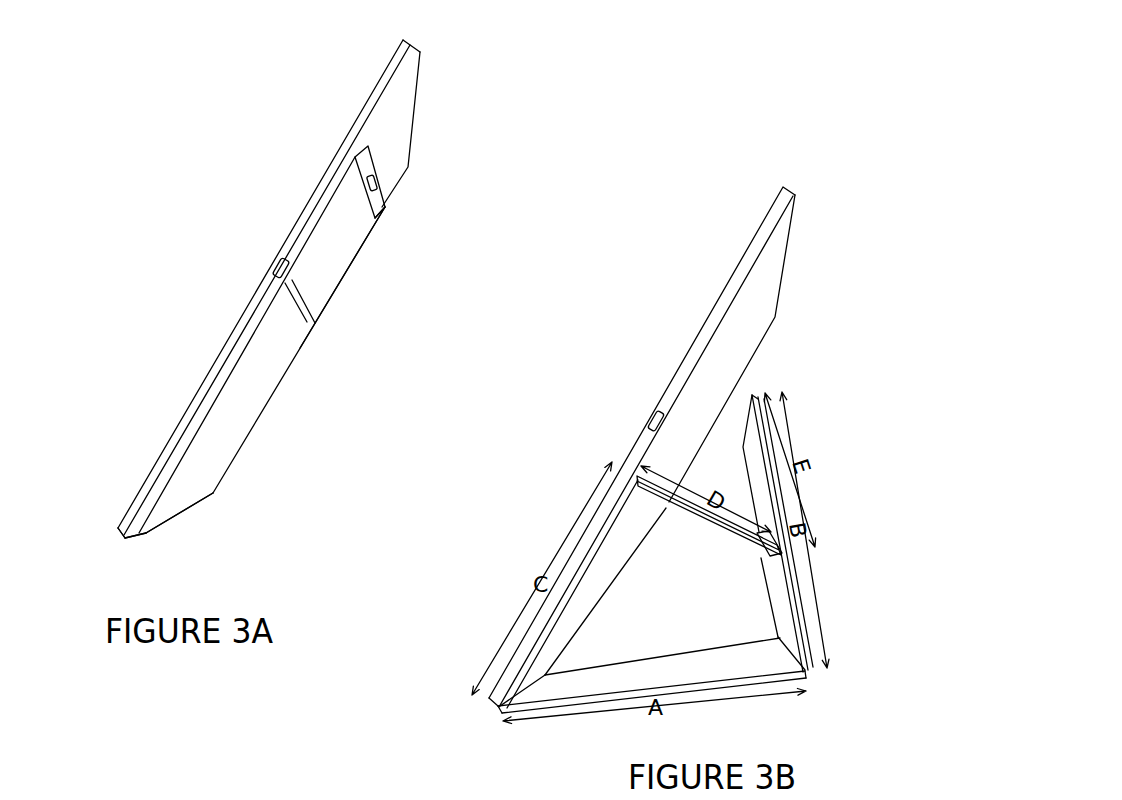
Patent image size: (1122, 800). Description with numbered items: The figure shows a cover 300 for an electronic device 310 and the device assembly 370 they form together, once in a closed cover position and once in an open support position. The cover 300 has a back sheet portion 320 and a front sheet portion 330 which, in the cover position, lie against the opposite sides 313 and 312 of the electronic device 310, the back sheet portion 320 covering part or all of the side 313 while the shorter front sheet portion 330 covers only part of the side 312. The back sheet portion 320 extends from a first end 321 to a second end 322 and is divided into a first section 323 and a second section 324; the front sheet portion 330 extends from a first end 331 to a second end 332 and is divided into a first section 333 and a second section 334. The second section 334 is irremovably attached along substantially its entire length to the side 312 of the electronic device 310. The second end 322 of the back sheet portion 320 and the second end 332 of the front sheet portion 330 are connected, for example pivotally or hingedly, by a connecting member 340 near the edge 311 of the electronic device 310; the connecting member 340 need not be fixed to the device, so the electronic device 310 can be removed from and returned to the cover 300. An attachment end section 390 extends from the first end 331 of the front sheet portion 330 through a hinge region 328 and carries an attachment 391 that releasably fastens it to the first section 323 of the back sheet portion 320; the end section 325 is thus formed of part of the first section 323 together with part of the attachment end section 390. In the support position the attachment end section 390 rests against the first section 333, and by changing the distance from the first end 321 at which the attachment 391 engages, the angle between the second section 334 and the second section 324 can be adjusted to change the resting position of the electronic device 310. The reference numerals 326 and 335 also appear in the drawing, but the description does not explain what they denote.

In FIG. 3A, the cover 300 is at (345, 95).
In FIG. 3B, the cover 300 is at (836, 400).
In FIG. 3A, the electronic device 310 is at (210, 397).
In FIG. 3B, the electronic device 310 is at (672, 397).
In FIG. 3A, the edge of the electronic device 311 is at (120, 533).
In FIG. 3B, the edge of the electronic device 311 is at (485, 705).
In FIG. 3A, the side of the electronic device 312 is at (388, 165).
In FIG. 3B, the side of the electronic device 312 is at (717, 360).
In FIG. 3A, the opposite side of the electronic device 313 is at (303, 207).
In FIG. 3B, the opposite side of the electronic device 313 is at (708, 318).
In FIG. 3A, the back sheet portion 320 is at (250, 300).
In FIG. 3B, the back sheet portion 320 is at (687, 692).
In FIG. 3A, the first end of the back sheet portion 321 is at (403, 40).
In FIG. 3B, the first end of the back sheet portion 321 is at (752, 396).
In FIG. 3A, the second end of the back sheet portion 322 is at (112, 530).
In FIG. 3B, the second end of the back sheet portion 322 is at (498, 712).
In FIG. 3A, the first section of the back sheet portion 323 is at (328, 165).
In FIG. 3B, the first section of the back sheet portion 323 is at (788, 612).
In FIG. 3A, the second section of the back sheet portion 324 is at (177, 420).
In FIG. 3B, the second section of the back sheet portion 324 is at (545, 700).
In FIG. 3B, the end section 325 is at (757, 448).
In FIG. 3A, the frame corner 326 is at (278, 258).
In FIG. 3B, the frame corner 326 is at (806, 672).
In FIG. 3B, the hinge region 328 is at (810, 552).
In FIG. 3A, the front sheet portion 330 is at (280, 358).
In FIG. 3B, the front sheet portion 330 is at (610, 567).
In FIG. 3A, the first end of the front sheet portion 331 is at (375, 214).
In FIG. 3B, the first end of the front sheet portion 331 is at (766, 560).
In FIG. 3A, the second end of the front sheet portion 332 is at (204, 506).
In FIG. 3B, the second end of the front sheet portion 332 is at (545, 673).
In FIG. 3A, the first section of the front sheet portion 333 is at (343, 266).
In FIG. 3B, the first section of the front sheet portion 333 is at (712, 527).
In FIG. 3A, the second section of the front sheet portion 334 is at (255, 413).
In FIG. 3B, the second section of the front sheet portion 334 is at (550, 640).
In FIG. 3A, the hinge 335 is at (312, 322).
In FIG. 3B, the hinge 335 is at (638, 470).
In FIG. 3A, the connecting member 340 is at (127, 543).
In FIG. 3A, the device assembly 370 is at (221, 139).
In FIG. 3B, the device assembly 370 is at (566, 358).
In FIG. 3A, the attachment end section 390 is at (379, 200).
In FIG. 3B, the attachment end section 390 is at (758, 532).
In FIG. 3A, the attachment 391 is at (380, 183).